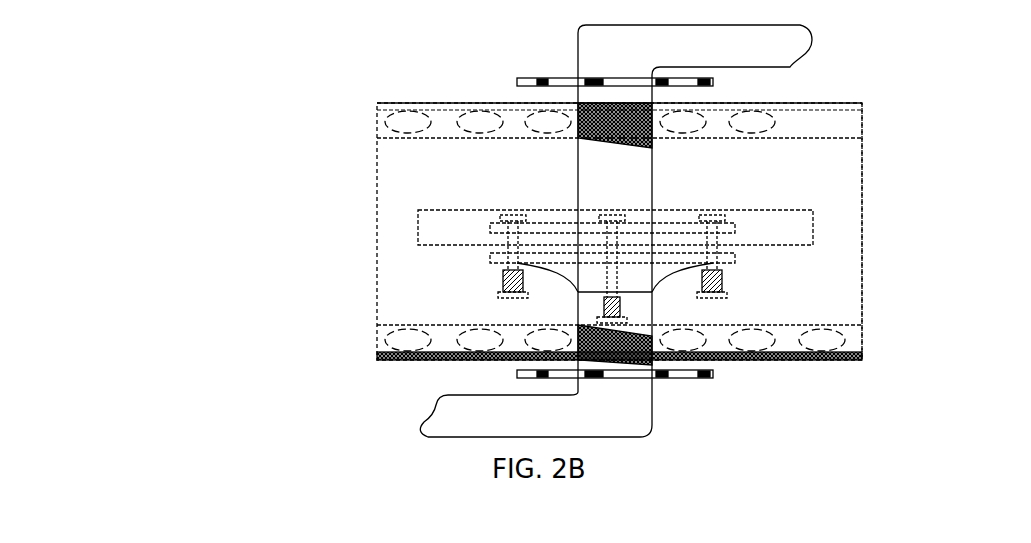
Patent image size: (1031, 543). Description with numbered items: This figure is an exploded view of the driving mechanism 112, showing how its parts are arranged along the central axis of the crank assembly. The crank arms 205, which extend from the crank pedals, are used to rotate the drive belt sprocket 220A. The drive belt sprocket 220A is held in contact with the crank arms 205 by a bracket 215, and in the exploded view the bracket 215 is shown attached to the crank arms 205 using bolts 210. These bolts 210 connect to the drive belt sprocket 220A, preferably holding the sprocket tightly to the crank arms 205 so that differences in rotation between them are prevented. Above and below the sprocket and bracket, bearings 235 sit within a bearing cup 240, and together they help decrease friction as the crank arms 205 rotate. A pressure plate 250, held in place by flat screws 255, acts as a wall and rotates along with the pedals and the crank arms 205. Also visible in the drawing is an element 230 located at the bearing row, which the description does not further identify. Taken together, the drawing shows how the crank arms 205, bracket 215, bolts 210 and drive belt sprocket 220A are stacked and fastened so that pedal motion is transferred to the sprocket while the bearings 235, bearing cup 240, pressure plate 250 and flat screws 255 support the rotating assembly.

The driving mechanism 112 is at (312, 29).
The crank arms 205 is at (473, 437).
The bolts 210 is at (498, 296).
The bracket 215 is at (690, 252).
The drive belt sprocket 220A is at (418, 222).
The ring seal 230 is at (377, 128).
The bearings 235 is at (770, 108).
The bearing cup 240 is at (836, 125).
The pressure plate 250 is at (463, 103).
The flat screws 255 is at (563, 78).